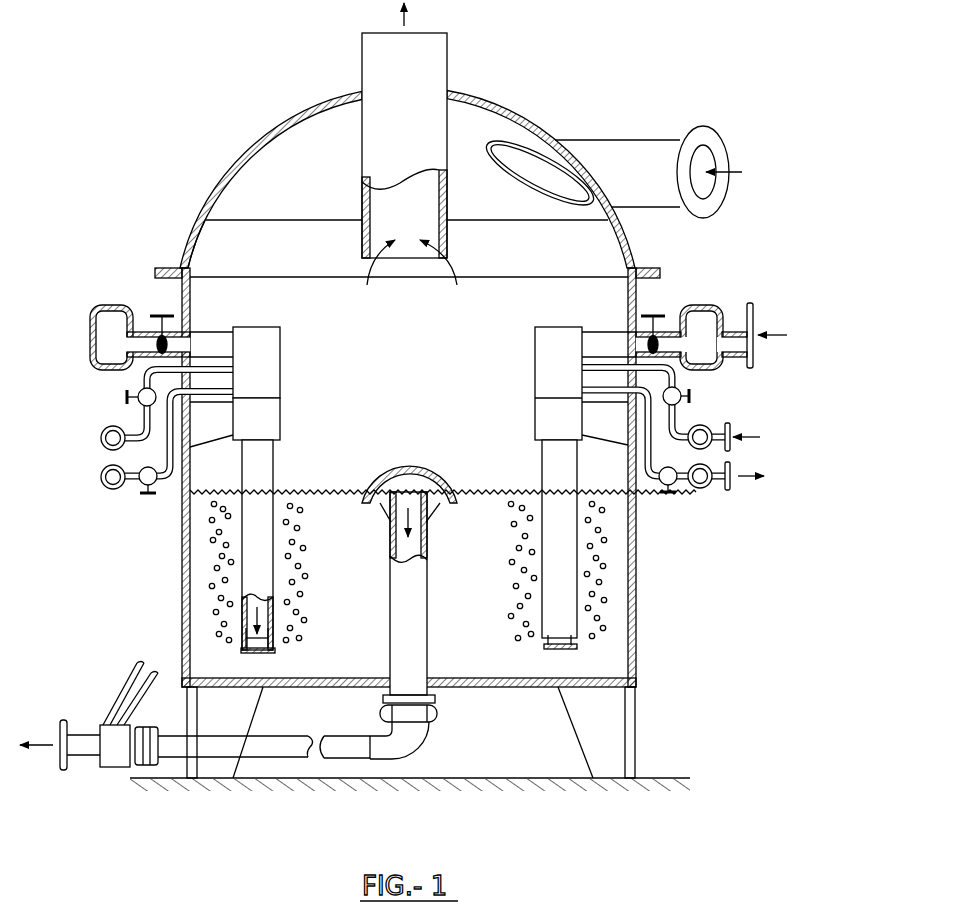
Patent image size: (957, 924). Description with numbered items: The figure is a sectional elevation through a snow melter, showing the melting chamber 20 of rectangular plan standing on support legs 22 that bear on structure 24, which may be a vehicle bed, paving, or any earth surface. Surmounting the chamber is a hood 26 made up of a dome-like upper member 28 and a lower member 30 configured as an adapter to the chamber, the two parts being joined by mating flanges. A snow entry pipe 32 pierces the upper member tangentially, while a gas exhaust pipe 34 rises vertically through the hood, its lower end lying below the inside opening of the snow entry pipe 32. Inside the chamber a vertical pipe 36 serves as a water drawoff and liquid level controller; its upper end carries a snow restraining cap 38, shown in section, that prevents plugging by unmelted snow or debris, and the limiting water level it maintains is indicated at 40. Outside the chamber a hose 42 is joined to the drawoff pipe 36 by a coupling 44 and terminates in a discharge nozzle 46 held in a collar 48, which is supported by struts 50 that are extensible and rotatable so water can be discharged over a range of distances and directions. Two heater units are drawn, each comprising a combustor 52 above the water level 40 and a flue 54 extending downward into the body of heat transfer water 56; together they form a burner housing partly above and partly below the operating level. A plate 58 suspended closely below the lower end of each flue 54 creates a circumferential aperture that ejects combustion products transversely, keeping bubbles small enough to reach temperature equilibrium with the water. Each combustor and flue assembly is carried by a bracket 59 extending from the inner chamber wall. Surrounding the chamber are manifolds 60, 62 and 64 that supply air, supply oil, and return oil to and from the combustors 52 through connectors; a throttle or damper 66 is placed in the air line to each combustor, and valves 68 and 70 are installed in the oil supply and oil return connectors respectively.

The melting chamber 20 is at (637, 581).
The support legs 22 is at (630, 720).
The structure 24 is at (522, 778).
The hood 26 is at (190, 213).
The dome-like upper member 28 is at (215, 189).
The lower member 30 is at (193, 239).
The snow entry pipe 32 is at (614, 150).
The gas exhaust pipe 34 is at (428, 57).
The vertical pipe 36 is at (400, 581).
The snow restraining cap 38 is at (382, 472).
The limiting water level 40 is at (337, 491).
The hose 42 is at (281, 737).
The coupling 44 is at (440, 715).
The discharge fitting or nozzle 46 is at (88, 738).
The collar 48 is at (115, 758).
The struts 50 is at (130, 690).
The combustor 52 is at (272, 358).
The flue 54 is at (263, 544).
The body of heat transfer water 56 is at (490, 590).
The plate 58 is at (275, 650).
The bracket 59 is at (268, 422).
The manifold 60 is at (705, 307).
The manifold 62 is at (700, 425).
The manifold 64 is at (701, 489).
The throttle or damper 66 is at (158, 313).
The valve 68 is at (125, 397).
The valve 70 is at (149, 497).